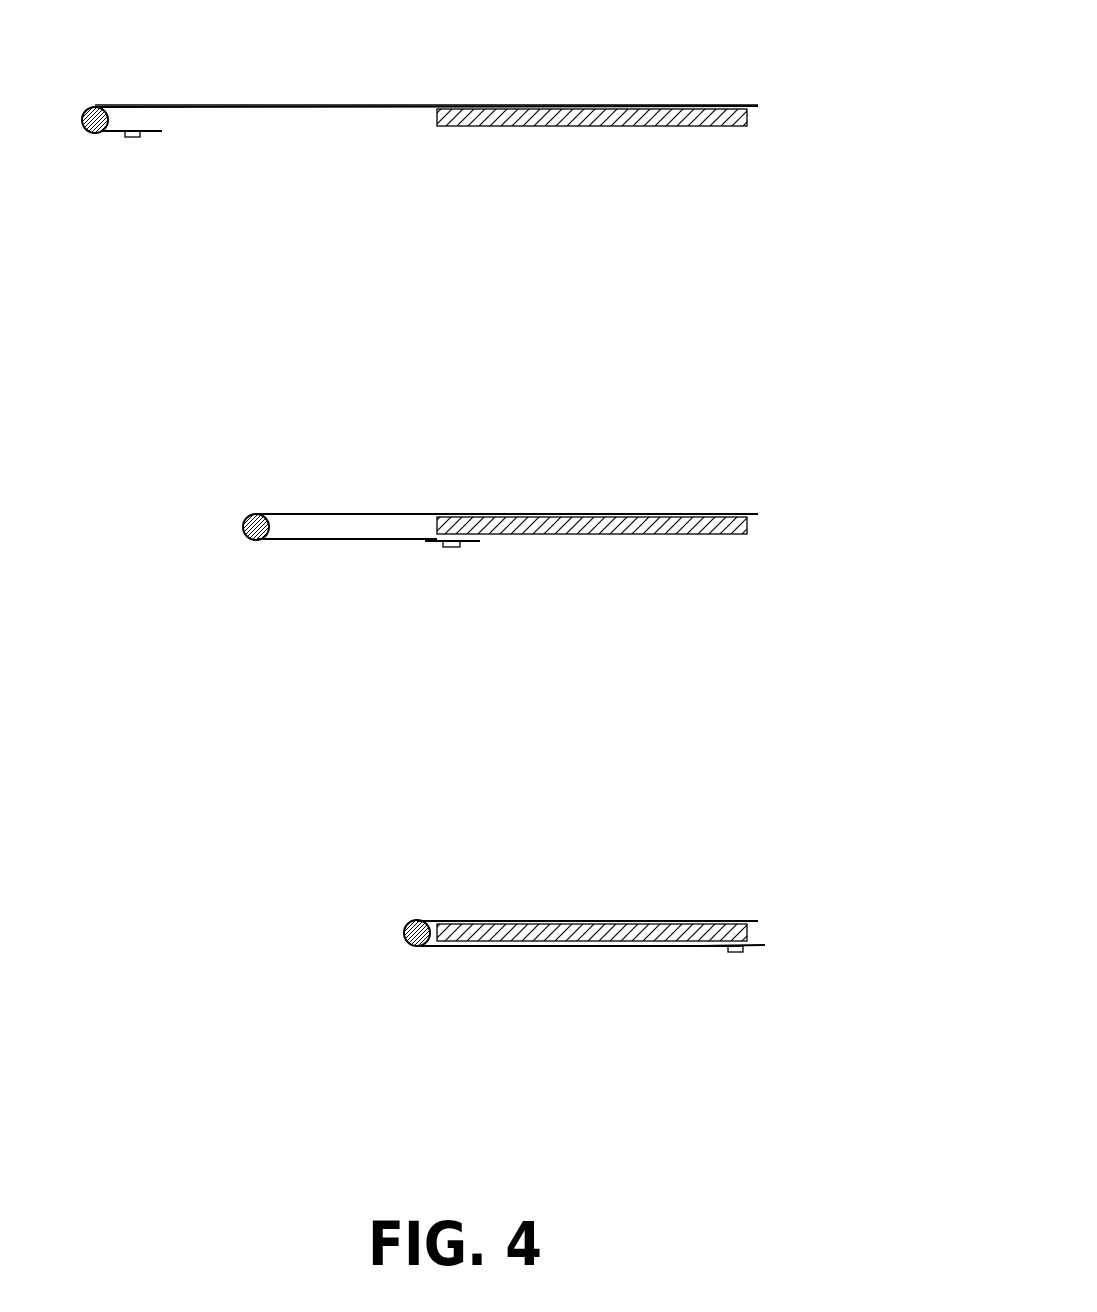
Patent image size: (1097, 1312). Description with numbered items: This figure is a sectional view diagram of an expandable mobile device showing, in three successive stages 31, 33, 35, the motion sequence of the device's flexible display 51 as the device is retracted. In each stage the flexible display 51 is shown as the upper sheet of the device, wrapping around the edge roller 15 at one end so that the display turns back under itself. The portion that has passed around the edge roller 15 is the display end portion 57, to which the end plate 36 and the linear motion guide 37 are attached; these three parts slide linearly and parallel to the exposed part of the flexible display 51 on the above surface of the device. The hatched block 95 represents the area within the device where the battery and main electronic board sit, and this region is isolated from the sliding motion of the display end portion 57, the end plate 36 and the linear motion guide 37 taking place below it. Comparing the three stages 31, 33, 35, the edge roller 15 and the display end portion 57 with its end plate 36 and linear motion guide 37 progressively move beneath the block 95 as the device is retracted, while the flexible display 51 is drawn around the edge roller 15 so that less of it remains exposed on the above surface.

The first assembly configuration 31 is at (820, 53).
The second assembly configuration 33 is at (822, 457).
The third assembly configuration 35 is at (822, 879).
The edge roller 15 is at (92, 104).
The display end portion 57 is at (82, 120).
The flexible display 51 is at (703, 105).
The block 95 is at (605, 127).
The end plate 36 is at (108, 132).
The linear motion guide 37 is at (148, 137).